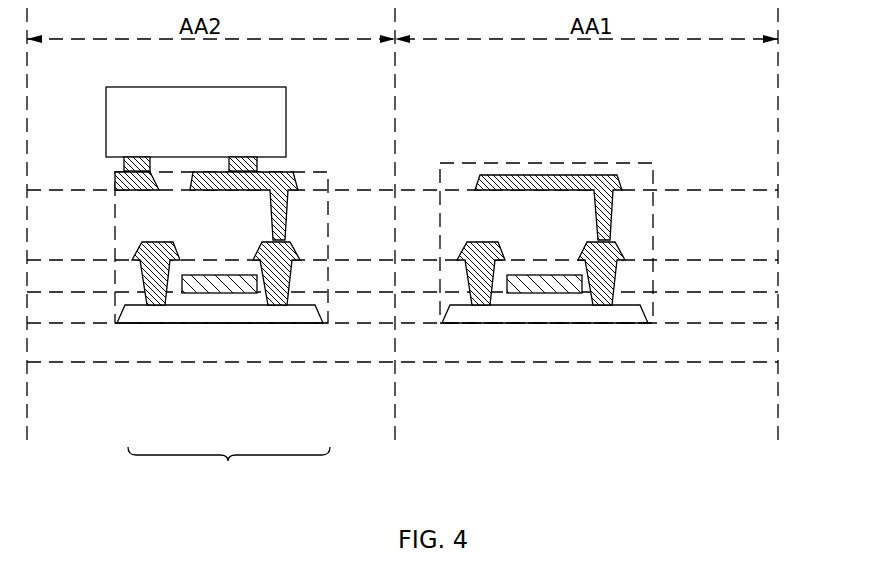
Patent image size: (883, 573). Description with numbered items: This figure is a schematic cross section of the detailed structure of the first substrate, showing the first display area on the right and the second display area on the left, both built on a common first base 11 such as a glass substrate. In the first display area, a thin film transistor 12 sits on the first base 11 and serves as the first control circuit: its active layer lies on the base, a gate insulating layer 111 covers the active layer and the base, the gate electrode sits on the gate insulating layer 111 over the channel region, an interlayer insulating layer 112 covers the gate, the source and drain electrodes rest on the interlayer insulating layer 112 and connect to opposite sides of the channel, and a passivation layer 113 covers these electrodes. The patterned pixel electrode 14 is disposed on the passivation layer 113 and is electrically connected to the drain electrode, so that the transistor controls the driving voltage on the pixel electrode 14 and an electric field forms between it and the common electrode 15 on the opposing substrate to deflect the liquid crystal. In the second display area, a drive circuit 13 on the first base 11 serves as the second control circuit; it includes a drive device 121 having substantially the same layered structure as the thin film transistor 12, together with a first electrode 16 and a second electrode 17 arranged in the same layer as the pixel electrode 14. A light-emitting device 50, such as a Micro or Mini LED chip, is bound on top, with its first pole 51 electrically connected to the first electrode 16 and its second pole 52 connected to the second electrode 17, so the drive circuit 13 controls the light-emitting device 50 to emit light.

The first base 11 is at (725, 340).
The gate insulating layer 111 is at (725, 305).
The interlayer insulating layer 112 is at (725, 273).
The passivation layer 113 is at (725, 238).
The thin film transistor 12 is at (645, 325).
The drive device 121 is at (229, 466).
The drive circuit 13 is at (322, 325).
The pixel electrode 14 is at (545, 187).
The common electrode 15 is at (647, 215).
The first electrode 16 is at (292, 180).
The second electrode 17 is at (122, 183).
The light-emitting device 50 is at (218, 105).
The first pole 51 is at (250, 160).
The second pole 52 is at (130, 158).